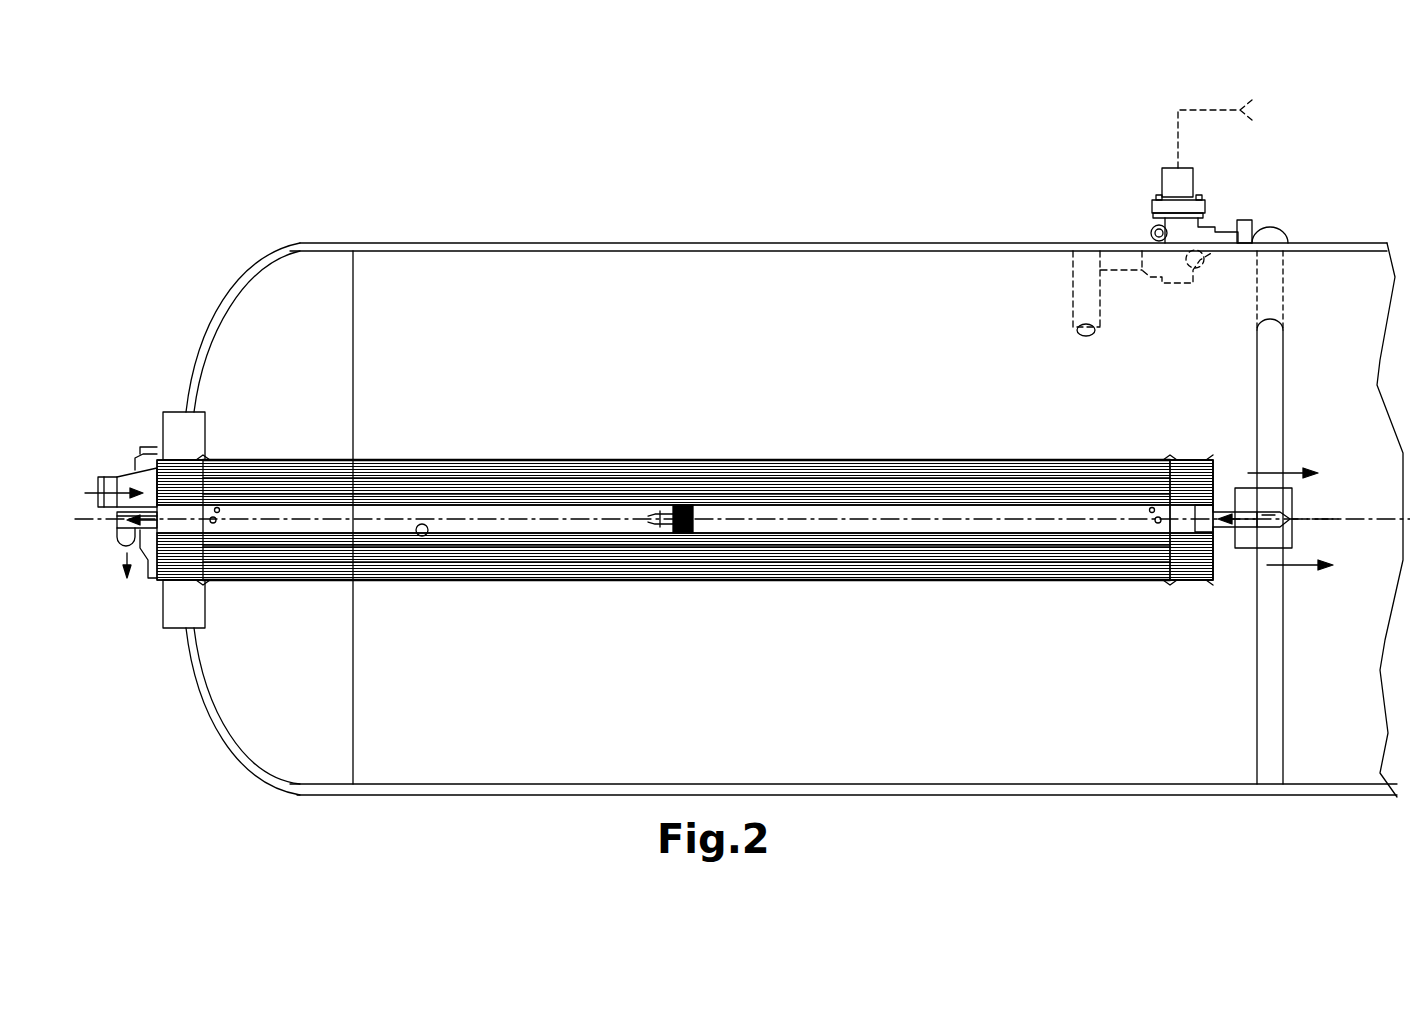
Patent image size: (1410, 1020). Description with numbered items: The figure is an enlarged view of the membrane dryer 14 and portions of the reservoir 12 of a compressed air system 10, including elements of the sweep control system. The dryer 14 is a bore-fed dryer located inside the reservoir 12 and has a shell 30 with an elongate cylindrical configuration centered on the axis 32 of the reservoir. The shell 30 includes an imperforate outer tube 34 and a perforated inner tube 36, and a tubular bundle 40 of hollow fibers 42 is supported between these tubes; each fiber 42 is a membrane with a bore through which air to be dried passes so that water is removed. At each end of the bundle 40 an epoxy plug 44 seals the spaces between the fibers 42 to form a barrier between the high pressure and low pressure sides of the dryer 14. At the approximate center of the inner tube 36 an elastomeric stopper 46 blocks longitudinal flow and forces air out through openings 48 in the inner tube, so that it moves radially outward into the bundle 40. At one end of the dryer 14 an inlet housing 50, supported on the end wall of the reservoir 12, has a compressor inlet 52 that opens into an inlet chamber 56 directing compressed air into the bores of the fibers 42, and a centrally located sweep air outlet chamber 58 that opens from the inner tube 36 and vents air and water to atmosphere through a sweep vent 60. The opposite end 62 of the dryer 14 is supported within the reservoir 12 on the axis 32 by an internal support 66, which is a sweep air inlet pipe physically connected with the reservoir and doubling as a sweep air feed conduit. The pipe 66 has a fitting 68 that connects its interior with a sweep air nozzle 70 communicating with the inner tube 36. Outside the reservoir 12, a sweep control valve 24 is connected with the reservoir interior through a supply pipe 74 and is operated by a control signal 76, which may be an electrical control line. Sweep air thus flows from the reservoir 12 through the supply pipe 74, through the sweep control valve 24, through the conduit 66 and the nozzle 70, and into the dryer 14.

The compressed air system 10 is at (506, 834).
The reservoir 12 is at (579, 238).
The membrane dryer 14 is at (690, 523).
The sweep control valve 24 is at (1142, 200).
The shell 30 is at (479, 456).
The axis 32 is at (1340, 515).
The imperforate outer tube 34 is at (406, 466).
The perforated inner tube 36 is at (421, 537).
The tubular bundle 40 is at (571, 470).
The hollow fibers 42 is at (623, 487).
The epoxy plug 44 is at (205, 470).
The stopper 46 is at (683, 535).
The openings 48 is at (225, 534).
The inlet housing 50 is at (149, 458).
The compressor inlet 52 is at (108, 477).
The inlet chamber 56 is at (190, 410).
The sweep air outlet chamber 58 is at (110, 526).
The sweep vent 60 is at (121, 556).
The opposite end 62 is at (1196, 456).
The internal support 66 is at (1272, 689).
The fitting 68 is at (1295, 541).
The sweep air nozzle 70 is at (1226, 533).
The supply pipe 74 is at (1076, 300).
The control signal 76 is at (1222, 110).